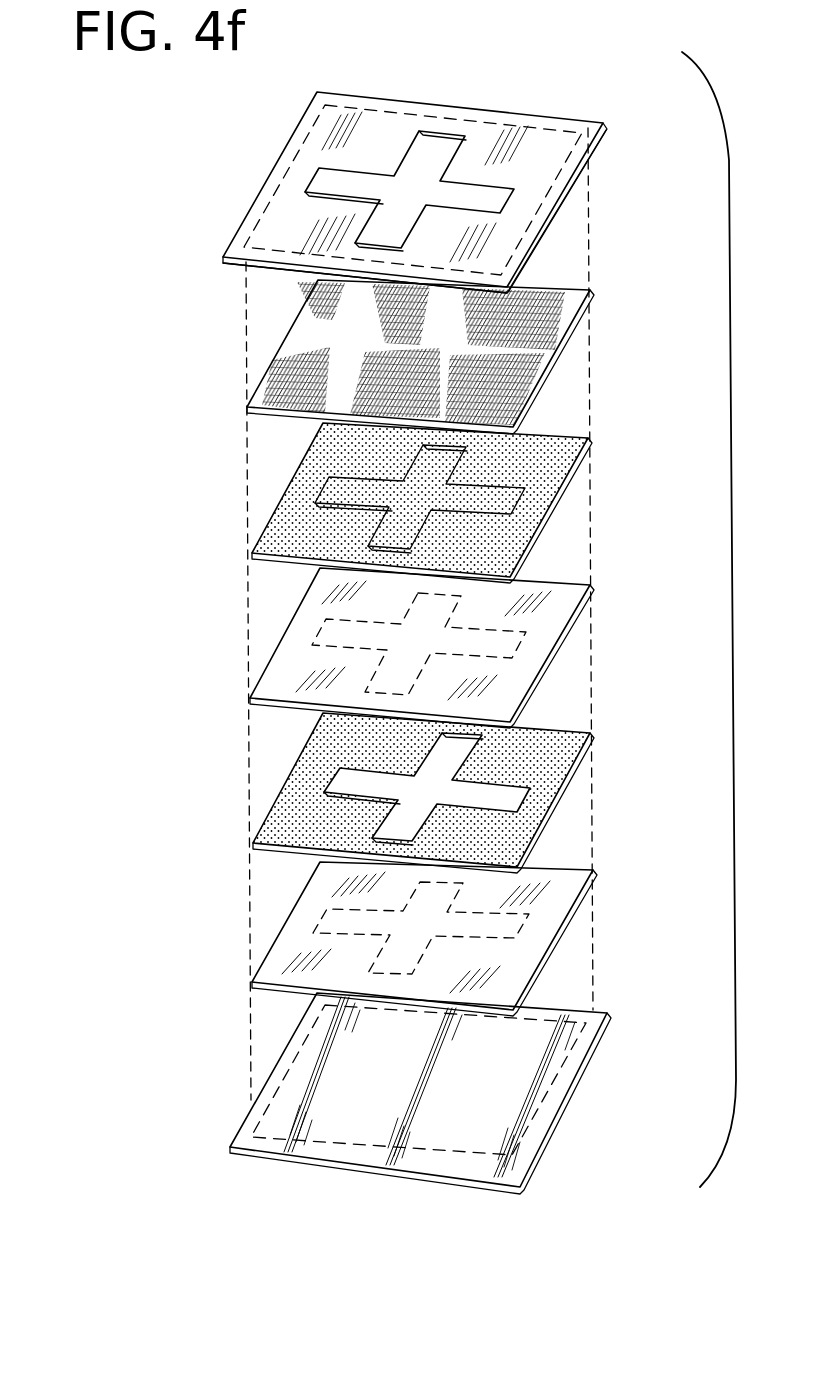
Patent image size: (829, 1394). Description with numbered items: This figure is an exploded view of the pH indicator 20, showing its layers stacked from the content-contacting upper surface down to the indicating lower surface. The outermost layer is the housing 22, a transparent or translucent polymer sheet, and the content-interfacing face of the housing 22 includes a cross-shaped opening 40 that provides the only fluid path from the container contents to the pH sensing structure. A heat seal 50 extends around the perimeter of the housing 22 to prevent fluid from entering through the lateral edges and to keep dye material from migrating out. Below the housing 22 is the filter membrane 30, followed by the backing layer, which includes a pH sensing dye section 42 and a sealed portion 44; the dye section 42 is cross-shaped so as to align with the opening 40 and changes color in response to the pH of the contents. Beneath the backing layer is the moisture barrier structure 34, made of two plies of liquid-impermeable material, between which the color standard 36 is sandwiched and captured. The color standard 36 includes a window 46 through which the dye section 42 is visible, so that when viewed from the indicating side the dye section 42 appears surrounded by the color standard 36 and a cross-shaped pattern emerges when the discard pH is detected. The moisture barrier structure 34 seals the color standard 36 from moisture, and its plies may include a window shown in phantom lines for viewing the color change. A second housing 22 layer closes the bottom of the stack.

The pH indicator 20 is at (128, 197).
The housing 22 is at (290, 172).
The filter membrane 30 is at (555, 315).
The moisture barrier structure 34 is at (305, 625).
The color standard 36 is at (353, 748).
The opening 40 is at (460, 172).
The pH sensing dye section 42 is at (332, 487).
The sealed portion 44 is at (335, 440).
The window 46 is at (353, 783).
The heat seal 50 is at (540, 120).